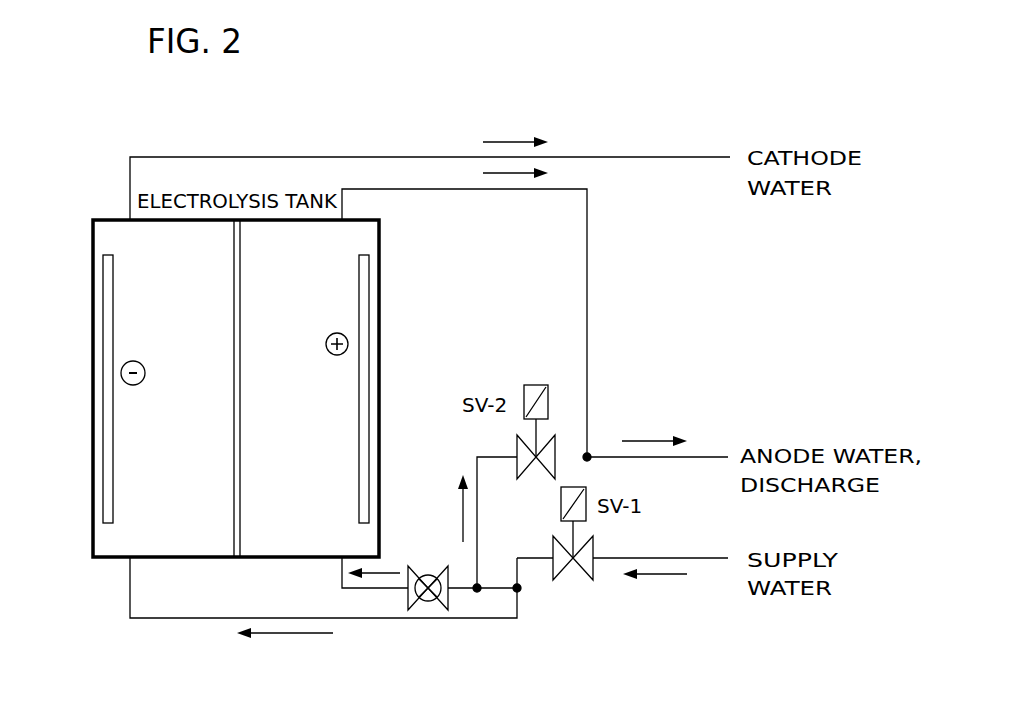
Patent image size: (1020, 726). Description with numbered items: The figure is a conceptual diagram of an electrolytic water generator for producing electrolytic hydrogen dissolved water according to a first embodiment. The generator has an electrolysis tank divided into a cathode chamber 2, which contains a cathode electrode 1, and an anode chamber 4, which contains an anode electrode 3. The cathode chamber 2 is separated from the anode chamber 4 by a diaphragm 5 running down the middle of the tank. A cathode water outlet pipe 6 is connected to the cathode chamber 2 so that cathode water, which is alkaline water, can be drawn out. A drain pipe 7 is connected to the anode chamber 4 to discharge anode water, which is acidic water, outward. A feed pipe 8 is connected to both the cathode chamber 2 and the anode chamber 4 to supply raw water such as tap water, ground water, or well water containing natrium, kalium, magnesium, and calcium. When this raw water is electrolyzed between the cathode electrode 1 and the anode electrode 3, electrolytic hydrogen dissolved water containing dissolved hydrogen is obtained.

The cathode electrode 1 is at (108, 377).
The cathode chamber 2 is at (137, 426).
The anode electrode 3 is at (363, 330).
The anode chamber 4 is at (337, 376).
The diaphragm 5 is at (238, 446).
The cathode water outlet pipe 6 is at (628, 157).
The drain pipe 7 is at (587, 313).
The feed pipe 8 is at (179, 618).